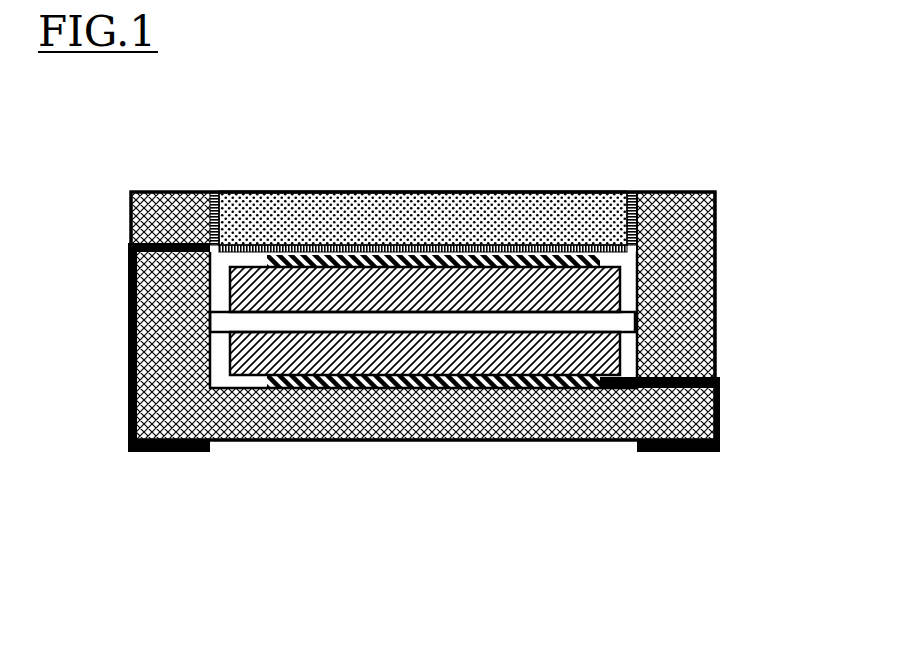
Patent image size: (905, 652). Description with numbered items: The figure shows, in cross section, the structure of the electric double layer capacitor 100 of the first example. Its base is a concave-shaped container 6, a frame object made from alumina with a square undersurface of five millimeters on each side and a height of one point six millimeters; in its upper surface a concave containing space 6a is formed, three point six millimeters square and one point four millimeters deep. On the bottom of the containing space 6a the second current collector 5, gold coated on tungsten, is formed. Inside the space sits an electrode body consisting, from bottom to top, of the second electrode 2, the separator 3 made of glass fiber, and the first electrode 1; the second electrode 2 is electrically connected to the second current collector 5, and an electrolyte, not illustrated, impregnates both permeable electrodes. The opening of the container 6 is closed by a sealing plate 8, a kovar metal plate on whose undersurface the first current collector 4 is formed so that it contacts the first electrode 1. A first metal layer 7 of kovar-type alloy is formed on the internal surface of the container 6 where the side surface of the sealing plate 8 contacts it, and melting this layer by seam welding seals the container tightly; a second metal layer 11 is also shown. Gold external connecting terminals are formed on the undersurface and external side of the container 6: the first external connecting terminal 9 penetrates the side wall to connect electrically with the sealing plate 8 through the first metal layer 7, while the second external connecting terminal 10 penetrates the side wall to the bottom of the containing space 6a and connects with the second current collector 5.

The first electrode 1 is at (240, 302).
The second electrode 2 is at (240, 362).
The separator 3 is at (600, 320).
The first current collector 4 is at (290, 257).
The second current collector 5 is at (358, 390).
The concave-shaped container 6 is at (437, 410).
The containing space 6a is at (503, 166).
The first metal layer 7 is at (633, 192).
The sealing plate 8 is at (447, 217).
The first external connecting terminal 9 is at (130, 453).
The second external connecting terminal 10 is at (720, 418).
The second metal layer 11 is at (602, 242).
The electric double layer capacitor 100 is at (435, 637).